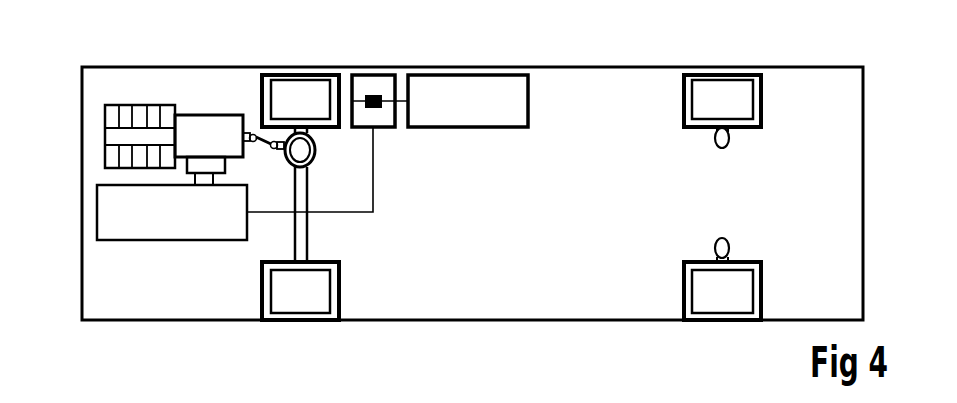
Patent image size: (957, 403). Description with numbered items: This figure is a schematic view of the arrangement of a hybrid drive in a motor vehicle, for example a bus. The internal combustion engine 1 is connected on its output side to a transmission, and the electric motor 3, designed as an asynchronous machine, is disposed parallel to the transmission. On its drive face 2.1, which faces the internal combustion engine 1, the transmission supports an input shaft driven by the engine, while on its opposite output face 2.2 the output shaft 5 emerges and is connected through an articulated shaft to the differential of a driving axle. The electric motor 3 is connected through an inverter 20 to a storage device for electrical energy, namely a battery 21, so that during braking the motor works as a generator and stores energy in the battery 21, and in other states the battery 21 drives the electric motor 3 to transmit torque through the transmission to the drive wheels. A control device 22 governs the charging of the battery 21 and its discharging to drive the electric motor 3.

The internal combustion engine 1 is at (138, 111).
The drive face 2.1 is at (172, 133).
The output face 2.2 is at (244, 117).
The electric motor 3 is at (213, 176).
The output shaft 5 is at (246, 141).
The inverter 20 is at (97, 221).
The battery 21 is at (458, 74).
The control device 22 is at (372, 74).